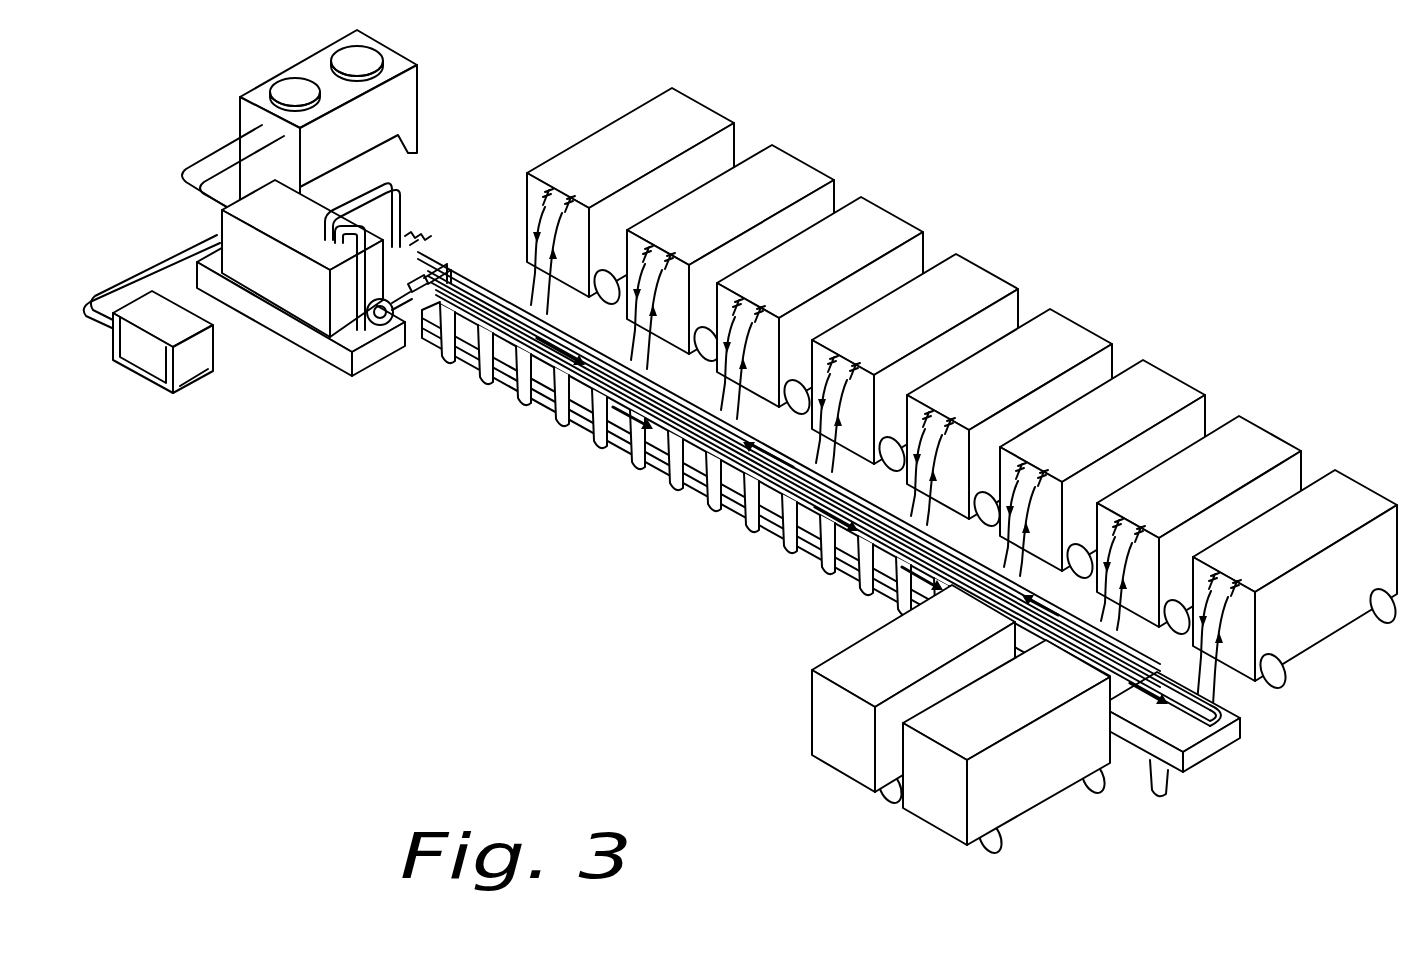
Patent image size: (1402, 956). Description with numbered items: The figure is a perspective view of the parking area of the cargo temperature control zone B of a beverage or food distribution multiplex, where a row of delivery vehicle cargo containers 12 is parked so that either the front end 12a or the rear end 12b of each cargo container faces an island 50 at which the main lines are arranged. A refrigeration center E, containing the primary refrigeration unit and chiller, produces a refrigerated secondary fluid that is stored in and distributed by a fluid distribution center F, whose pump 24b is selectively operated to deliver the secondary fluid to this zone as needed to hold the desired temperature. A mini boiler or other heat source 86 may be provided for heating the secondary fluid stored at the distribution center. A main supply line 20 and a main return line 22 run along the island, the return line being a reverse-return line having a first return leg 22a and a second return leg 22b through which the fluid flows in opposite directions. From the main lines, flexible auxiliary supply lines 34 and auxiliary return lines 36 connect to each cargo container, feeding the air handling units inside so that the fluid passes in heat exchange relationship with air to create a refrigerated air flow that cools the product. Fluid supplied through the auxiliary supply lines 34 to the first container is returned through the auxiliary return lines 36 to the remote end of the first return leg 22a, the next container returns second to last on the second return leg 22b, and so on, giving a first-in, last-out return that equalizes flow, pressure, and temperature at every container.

The cargo container 12 is at (1345, 606).
The front end of cargo container 12a is at (705, 112).
The rear end of cargo container 12b is at (810, 165).
The main supply line 20 is at (877, 490).
The main return line 22 is at (1205, 757).
The first return leg 22a is at (533, 391).
The second return leg 22b is at (700, 522).
The pump 24b is at (338, 348).
The auxiliary supply line 34 is at (598, 231).
The auxiliary return line 36 is at (533, 221).
The island 50 is at (1168, 778).
The mini boiler 86 is at (163, 372).
The cargo temperature control zone B is at (998, 190).
The refrigeration center E is at (421, 99).
The fluid distribution center F is at (312, 316).